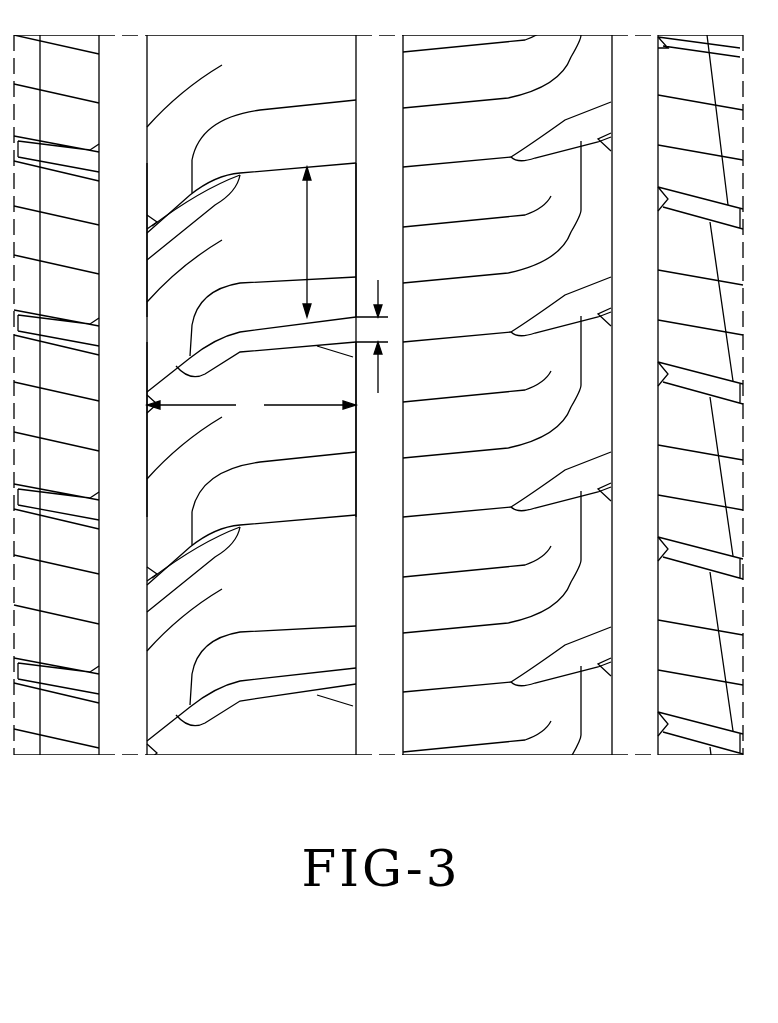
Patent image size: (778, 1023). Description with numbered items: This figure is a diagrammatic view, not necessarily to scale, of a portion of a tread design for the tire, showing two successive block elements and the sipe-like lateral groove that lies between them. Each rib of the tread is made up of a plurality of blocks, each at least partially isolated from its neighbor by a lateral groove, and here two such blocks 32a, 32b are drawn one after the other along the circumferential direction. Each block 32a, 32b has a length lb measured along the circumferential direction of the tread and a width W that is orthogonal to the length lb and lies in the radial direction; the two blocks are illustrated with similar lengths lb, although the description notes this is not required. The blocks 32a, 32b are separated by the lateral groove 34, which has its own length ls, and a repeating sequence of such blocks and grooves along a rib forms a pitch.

The block 32a is at (337, 208).
The block 32b is at (337, 442).
The lateral groove 34 is at (258, 340).
The width W is at (251, 406).
The block length lb is at (310, 242).
The lateral groove length ls is at (380, 281).